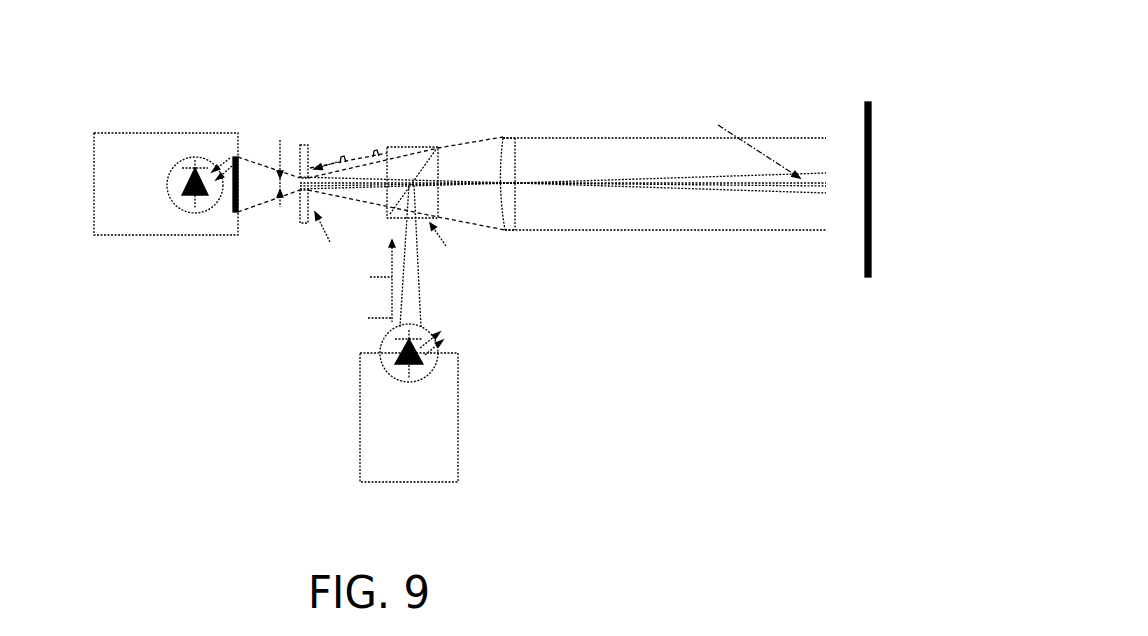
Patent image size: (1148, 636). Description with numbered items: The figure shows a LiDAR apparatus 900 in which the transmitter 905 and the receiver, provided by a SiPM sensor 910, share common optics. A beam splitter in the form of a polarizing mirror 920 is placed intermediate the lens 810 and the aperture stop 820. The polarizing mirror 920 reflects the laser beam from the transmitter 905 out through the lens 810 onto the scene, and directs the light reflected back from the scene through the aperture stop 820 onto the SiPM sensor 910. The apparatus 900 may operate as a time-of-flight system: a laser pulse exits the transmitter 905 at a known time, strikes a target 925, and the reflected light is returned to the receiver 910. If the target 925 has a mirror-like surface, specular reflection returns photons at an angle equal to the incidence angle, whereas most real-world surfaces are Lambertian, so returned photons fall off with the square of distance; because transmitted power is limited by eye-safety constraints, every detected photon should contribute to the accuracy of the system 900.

The LiDAR apparatus 900 is at (777, 57).
The SiPM sensor 910 is at (143, 135).
The aperture stop 820 is at (306, 158).
The polarizing mirror 920 is at (430, 165).
The lens 810 is at (517, 165).
The target 925 is at (866, 197).
The transmitter 905 is at (458, 410).